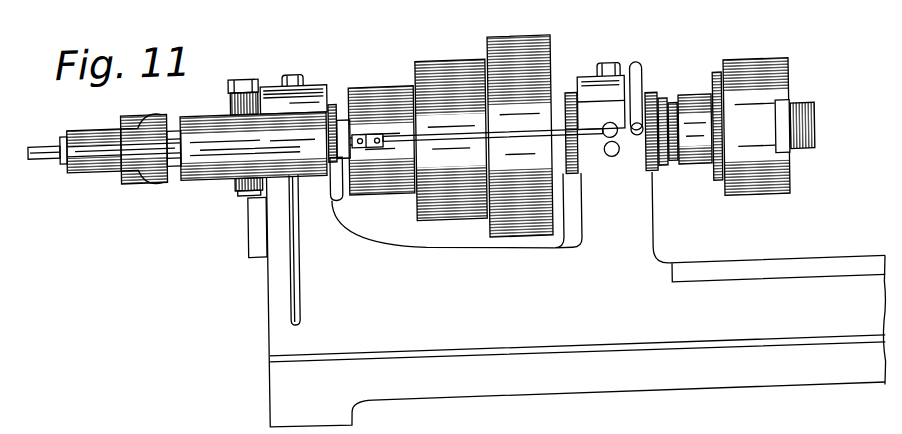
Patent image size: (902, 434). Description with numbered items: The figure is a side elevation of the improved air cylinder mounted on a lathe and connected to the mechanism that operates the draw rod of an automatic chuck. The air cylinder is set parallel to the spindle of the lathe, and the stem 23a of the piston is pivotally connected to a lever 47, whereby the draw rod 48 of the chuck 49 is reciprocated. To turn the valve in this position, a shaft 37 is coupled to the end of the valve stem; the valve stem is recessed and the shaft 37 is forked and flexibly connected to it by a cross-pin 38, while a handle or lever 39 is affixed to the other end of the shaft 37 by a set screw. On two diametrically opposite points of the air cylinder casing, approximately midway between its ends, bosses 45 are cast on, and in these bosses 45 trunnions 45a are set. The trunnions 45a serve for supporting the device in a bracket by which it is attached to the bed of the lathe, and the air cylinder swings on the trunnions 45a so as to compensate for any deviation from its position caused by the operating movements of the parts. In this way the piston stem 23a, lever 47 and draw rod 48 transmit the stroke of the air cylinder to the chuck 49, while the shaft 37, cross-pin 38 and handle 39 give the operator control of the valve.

The draw rod 48 is at (42, 147).
The lever 47 is at (92, 161).
The stem of the piston 23a is at (175, 144).
The bosses 45 is at (230, 108).
The trunnions 45a is at (239, 86).
The cross-pin 38 is at (357, 137).
The shaft 37 is at (538, 140).
The handle or lever 39 is at (636, 80).
The chuck 49 is at (783, 107).